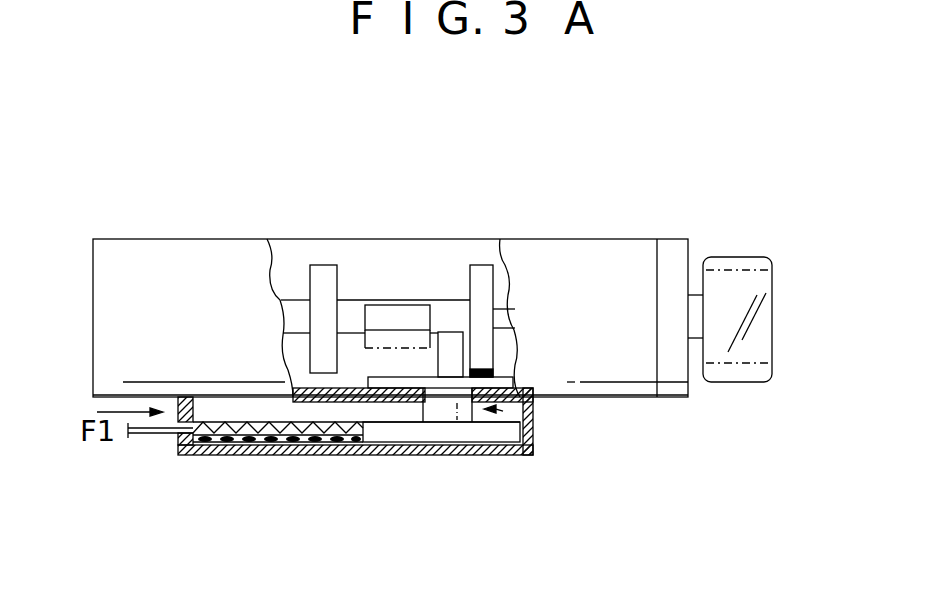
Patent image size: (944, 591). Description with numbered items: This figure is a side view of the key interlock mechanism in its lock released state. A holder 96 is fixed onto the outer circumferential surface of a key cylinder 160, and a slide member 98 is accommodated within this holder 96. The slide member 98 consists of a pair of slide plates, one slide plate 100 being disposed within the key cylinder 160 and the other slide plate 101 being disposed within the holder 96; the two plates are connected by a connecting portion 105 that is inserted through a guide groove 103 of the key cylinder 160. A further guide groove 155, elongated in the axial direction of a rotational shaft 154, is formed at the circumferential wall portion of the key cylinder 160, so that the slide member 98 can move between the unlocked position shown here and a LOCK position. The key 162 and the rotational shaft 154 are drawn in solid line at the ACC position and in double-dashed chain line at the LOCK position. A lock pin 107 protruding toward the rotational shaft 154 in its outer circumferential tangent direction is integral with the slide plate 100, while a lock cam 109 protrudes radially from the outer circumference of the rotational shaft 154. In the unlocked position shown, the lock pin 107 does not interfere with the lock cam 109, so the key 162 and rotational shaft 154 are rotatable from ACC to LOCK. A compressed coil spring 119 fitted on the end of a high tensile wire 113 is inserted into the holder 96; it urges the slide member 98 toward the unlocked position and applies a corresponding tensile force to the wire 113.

The key cylinder 160 is at (494, 214).
The key 162 is at (722, 255).
The rotational shaft 154 is at (357, 302).
The lock cam 109 is at (408, 312).
The lock pin 107 is at (450, 345).
The slide plate 101 is at (513, 372).
The guide groove 103 is at (328, 390).
The guide groove 155 is at (403, 396).
The connecting portion 105 is at (488, 448).
The slide member 98 is at (503, 411).
The slide plate 100 is at (515, 435).
The holder 96 is at (527, 455).
The coil spring 119 is at (267, 447).
The wire 113 is at (152, 438).